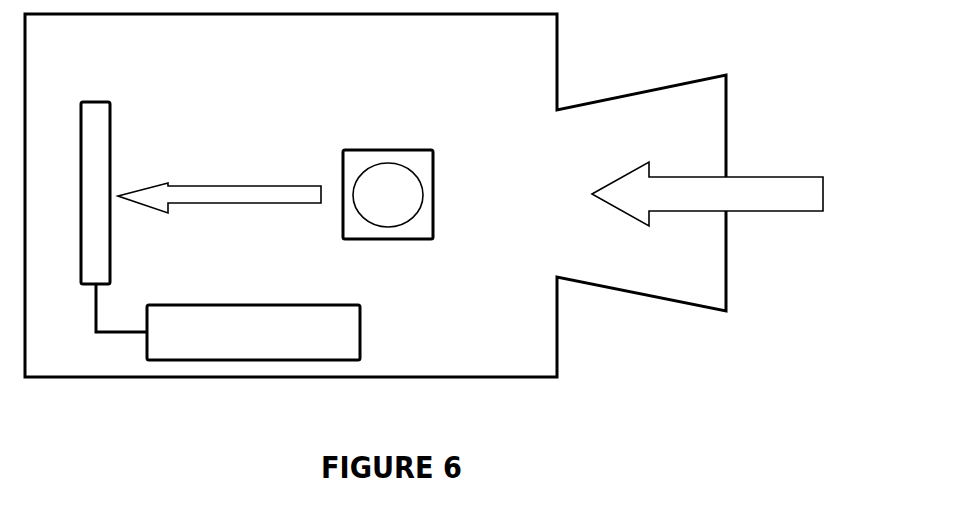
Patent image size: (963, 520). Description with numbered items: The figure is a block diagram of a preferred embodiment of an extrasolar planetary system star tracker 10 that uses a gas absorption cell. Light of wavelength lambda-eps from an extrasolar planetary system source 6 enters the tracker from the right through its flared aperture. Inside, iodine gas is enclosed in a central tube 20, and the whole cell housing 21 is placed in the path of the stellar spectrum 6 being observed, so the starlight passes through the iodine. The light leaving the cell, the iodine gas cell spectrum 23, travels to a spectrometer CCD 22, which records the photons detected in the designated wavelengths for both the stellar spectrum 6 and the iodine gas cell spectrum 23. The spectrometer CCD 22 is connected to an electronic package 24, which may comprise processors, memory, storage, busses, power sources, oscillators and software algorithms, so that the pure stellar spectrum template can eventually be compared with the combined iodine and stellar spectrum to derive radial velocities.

The extrasolar planetary system star tracker 10 is at (375, 195).
The extrasolar planetary system source 6 is at (727, 209).
The central tube 20 is at (388, 195).
The cell housing 21 is at (403, 185).
The spectrometer CCD 22 is at (114, 200).
The iodine gas cell spectrum 23 is at (219, 186).
The electronic package 24 is at (253, 332).